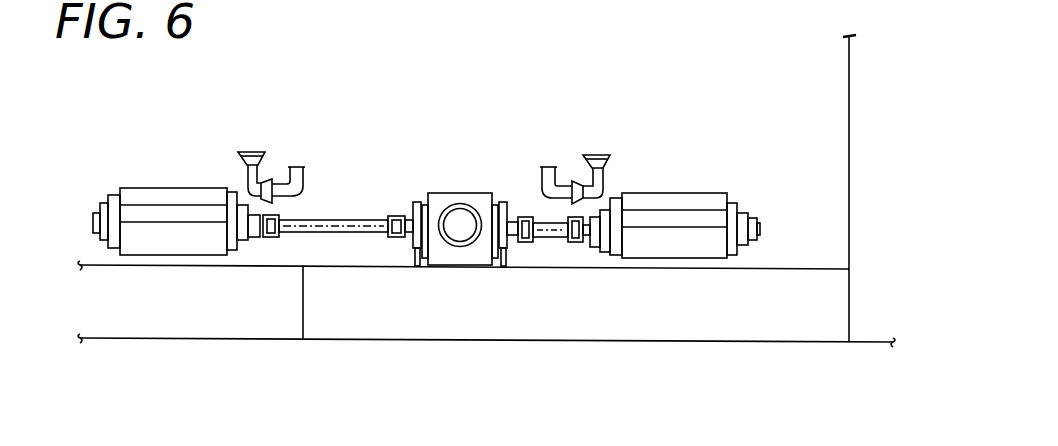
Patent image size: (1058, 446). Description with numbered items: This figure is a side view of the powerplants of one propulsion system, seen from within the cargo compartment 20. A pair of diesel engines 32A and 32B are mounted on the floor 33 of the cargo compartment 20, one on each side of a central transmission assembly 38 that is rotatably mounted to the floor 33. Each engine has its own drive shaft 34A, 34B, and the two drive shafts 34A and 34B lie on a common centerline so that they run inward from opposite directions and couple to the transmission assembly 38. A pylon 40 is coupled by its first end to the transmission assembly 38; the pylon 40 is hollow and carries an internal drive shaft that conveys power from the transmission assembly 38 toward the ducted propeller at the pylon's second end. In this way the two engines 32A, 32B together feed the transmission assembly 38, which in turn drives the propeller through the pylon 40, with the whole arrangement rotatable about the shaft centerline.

The cargo compartment 20 is at (475, 340).
The diesel engine 32A is at (163, 188).
The diesel engine 32B is at (662, 193).
The floor 33 is at (775, 268).
The drive shaft 34A is at (318, 220).
The drive shaft 34B is at (543, 217).
The transmission assembly 38 is at (413, 210).
The pylon 40 is at (460, 203).